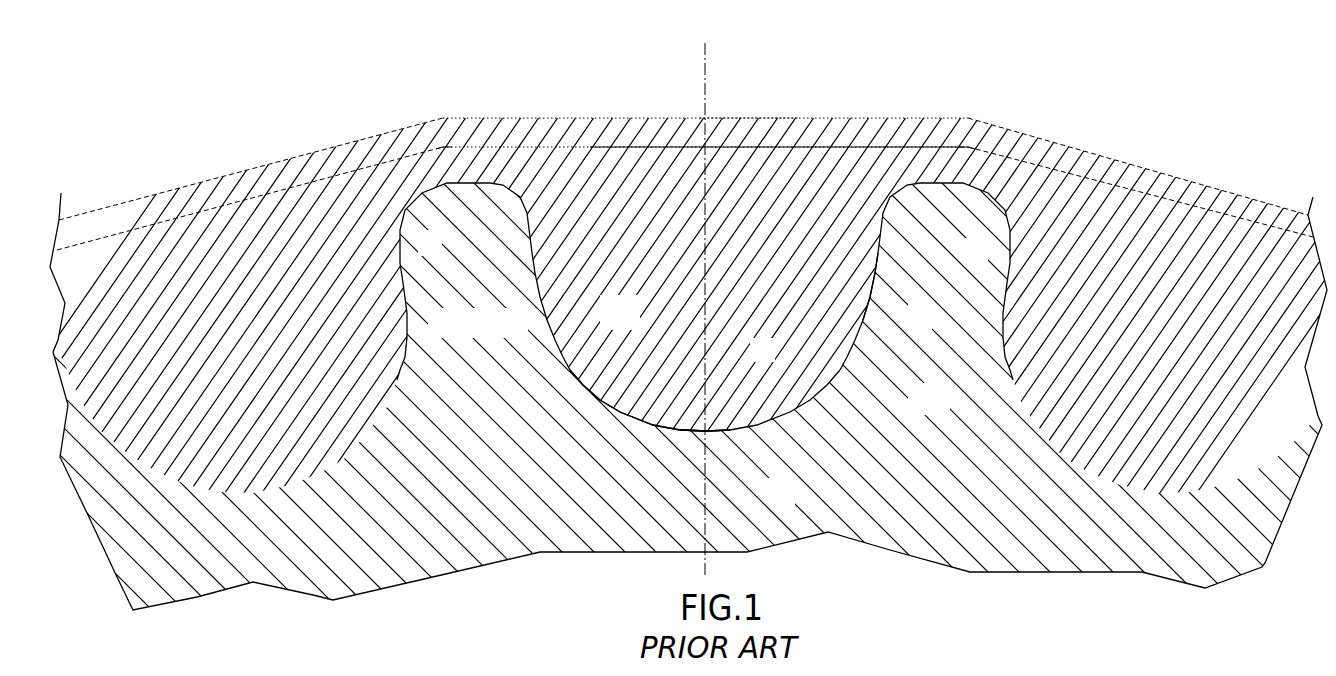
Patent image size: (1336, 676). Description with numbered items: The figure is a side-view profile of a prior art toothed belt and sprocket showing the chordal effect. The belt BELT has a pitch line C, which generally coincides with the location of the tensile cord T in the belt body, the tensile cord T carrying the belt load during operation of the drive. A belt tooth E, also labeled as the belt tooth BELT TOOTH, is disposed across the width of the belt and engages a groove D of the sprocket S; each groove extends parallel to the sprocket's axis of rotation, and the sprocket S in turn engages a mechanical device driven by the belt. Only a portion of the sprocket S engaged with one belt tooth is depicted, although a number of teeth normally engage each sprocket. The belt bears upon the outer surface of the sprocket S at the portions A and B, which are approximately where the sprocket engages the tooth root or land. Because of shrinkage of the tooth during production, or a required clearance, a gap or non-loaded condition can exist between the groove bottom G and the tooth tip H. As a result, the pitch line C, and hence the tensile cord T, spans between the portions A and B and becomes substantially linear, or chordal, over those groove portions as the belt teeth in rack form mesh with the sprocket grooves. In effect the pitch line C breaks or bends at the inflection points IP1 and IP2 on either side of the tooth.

The belt BELT is at (398, 128).
The sprocket S is at (945, 411).
The portion A is at (468, 189).
The portion B is at (942, 189).
The groove D is at (867, 313).
The belt tooth E is at (633, 323).
The belt tooth BELT TOOTH is at (570, 240).
The tooth tip H is at (712, 426).
The groove bottom G is at (712, 434).
The pitch line C is at (797, 145).
The inflection point IP1 is at (447, 147).
The inflection point IP2 is at (965, 147).
The tensile cord T is at (760, 135).